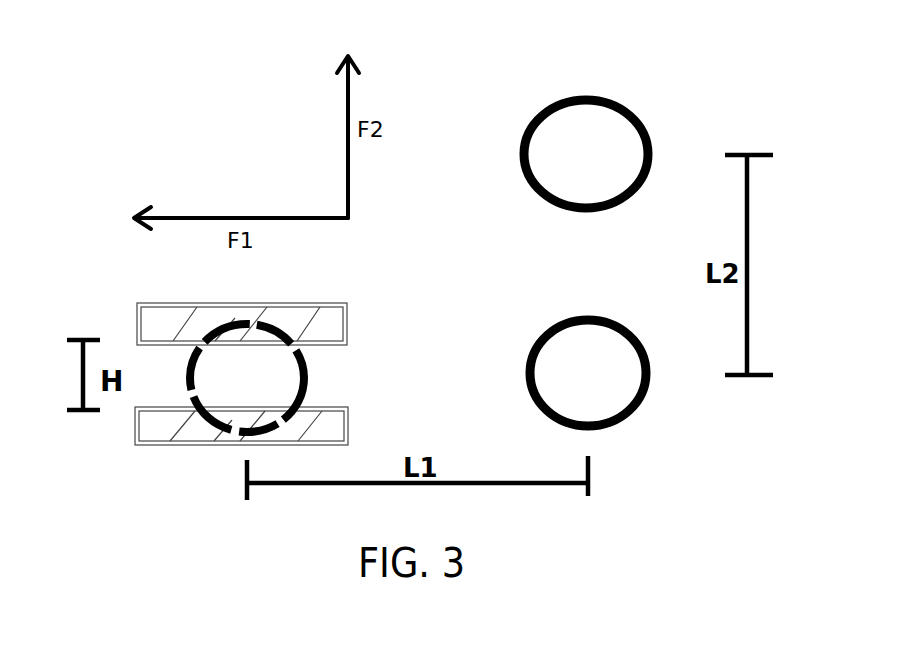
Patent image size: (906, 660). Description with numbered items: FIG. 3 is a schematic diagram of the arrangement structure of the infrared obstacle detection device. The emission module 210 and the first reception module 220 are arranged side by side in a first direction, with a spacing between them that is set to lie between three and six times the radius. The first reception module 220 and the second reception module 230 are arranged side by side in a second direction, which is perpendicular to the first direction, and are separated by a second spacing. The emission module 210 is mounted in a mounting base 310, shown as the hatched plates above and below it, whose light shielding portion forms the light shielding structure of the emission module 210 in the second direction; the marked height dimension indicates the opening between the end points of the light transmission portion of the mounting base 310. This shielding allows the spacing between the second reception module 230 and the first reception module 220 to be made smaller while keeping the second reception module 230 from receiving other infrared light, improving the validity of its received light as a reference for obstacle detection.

The mounting base 310 is at (302, 308).
The emission module 210 is at (297, 375).
The second reception module 230 is at (612, 128).
The first reception module 220 is at (623, 397).